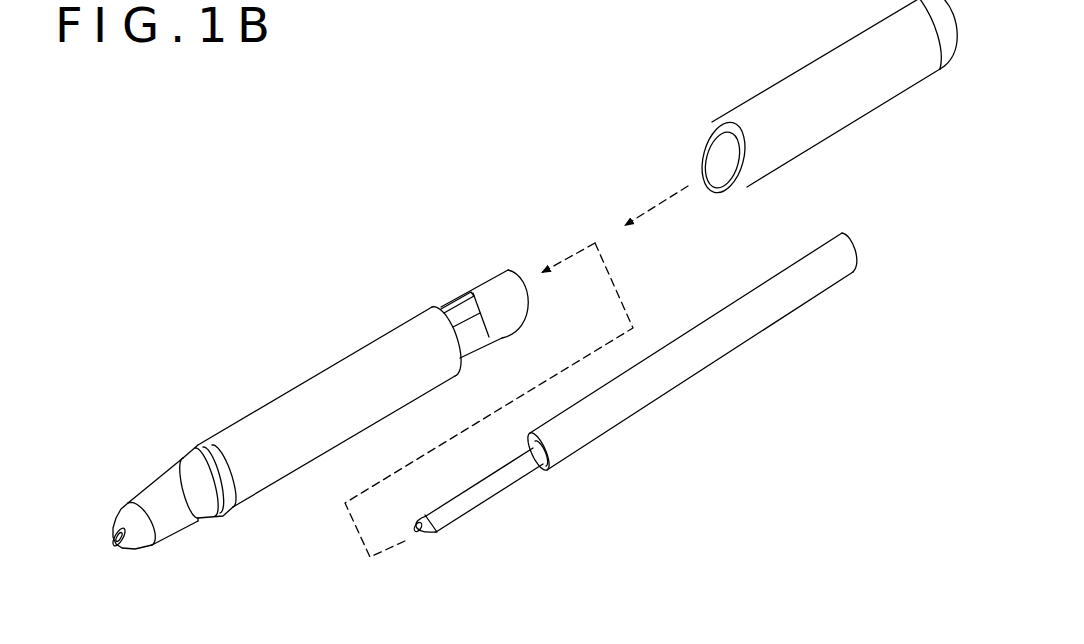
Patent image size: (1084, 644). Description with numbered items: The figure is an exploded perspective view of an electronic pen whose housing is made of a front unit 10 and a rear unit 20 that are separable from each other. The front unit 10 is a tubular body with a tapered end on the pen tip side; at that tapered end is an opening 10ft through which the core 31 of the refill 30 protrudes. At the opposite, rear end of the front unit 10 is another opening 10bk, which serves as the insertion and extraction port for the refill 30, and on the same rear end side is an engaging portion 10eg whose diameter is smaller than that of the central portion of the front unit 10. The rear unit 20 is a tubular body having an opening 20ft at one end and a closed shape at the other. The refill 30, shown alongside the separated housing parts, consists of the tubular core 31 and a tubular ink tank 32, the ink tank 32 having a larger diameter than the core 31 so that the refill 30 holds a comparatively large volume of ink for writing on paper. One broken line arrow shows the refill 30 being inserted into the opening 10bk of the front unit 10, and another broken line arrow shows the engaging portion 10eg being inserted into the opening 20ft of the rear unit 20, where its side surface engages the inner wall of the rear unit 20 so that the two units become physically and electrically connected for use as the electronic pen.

The front unit 10 is at (302, 401).
The opening 10ft is at (106, 546).
The engaging portion 10eg is at (461, 271).
The opening 10bk is at (497, 281).
The rear unit 20 is at (791, 98).
The opening 20ft is at (692, 162).
The refill 30 is at (635, 402).
The core 31 is at (473, 507).
The ink tank 32 is at (758, 332).